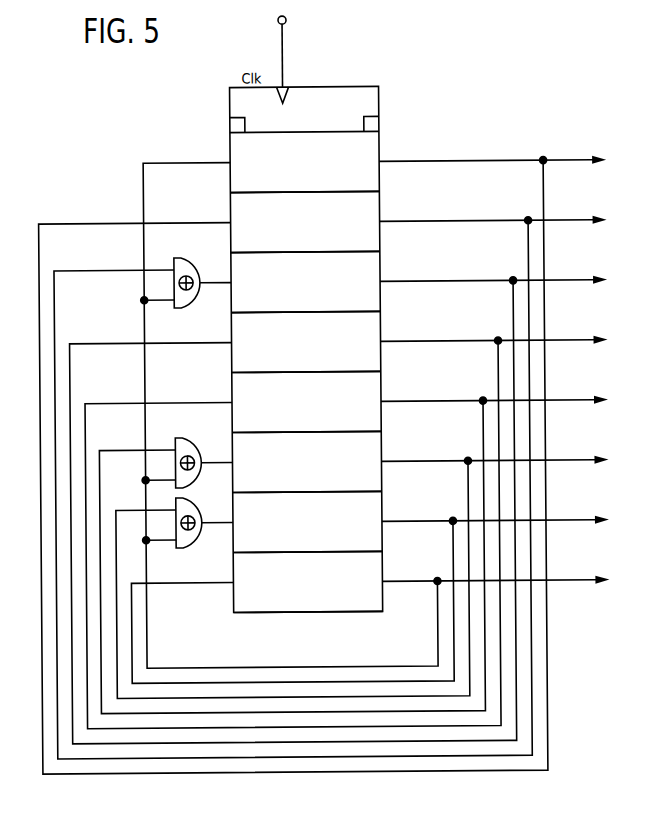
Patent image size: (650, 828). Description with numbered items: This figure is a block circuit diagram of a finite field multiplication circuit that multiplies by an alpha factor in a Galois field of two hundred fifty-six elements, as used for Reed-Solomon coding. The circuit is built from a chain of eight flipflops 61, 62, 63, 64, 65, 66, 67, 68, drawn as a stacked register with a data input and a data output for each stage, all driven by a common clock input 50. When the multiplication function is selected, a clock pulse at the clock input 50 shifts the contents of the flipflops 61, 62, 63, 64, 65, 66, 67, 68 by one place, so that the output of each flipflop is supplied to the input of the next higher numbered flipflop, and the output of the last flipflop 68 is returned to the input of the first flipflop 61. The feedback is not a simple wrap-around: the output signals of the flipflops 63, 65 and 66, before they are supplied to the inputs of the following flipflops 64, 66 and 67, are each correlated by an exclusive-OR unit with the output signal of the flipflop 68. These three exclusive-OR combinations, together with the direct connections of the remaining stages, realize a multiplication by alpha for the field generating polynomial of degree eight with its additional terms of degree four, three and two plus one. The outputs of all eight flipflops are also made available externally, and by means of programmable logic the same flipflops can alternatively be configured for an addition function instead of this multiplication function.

The clock input 50 is at (289, 20).
The flipflop 61 is at (381, 146).
The flipflop 62 is at (381, 206).
The flipflop 63 is at (381, 266).
The flipflop 64 is at (381, 326).
The flipflop 65 is at (381, 386).
The flipflop 66 is at (381, 446).
The flipflop 67 is at (381, 506).
The flipflop 68 is at (381, 566).